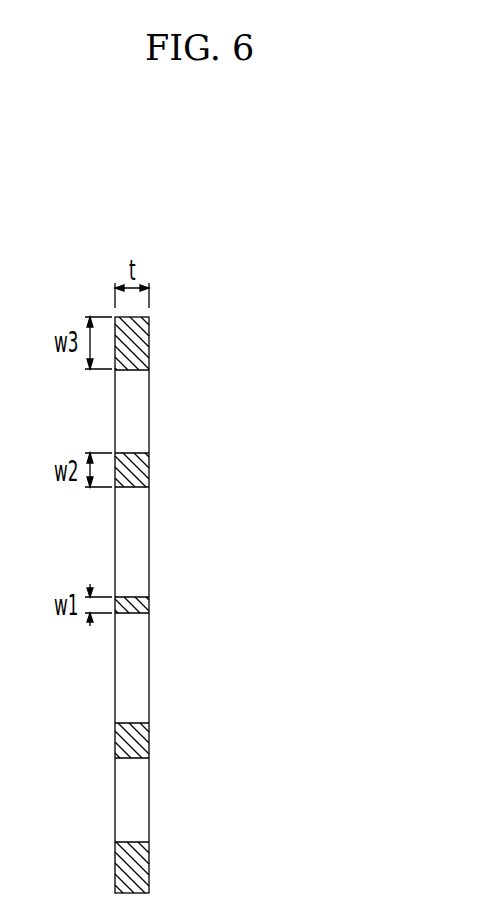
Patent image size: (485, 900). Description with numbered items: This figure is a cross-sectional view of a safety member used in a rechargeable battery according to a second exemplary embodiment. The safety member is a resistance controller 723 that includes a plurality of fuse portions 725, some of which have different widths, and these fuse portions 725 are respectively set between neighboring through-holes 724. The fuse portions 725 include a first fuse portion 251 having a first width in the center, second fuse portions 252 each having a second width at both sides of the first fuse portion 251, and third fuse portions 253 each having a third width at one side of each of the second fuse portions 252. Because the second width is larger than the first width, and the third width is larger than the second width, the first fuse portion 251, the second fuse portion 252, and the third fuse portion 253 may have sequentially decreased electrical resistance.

The resistance controller 723 is at (315, 342).
The through-holes 724 is at (135, 675).
The fuse portions 725 is at (221, 617).
The first fuse portion 251 is at (138, 605).
The second fuse portions 252 is at (135, 470).
The third fuse portions 253 is at (135, 345).